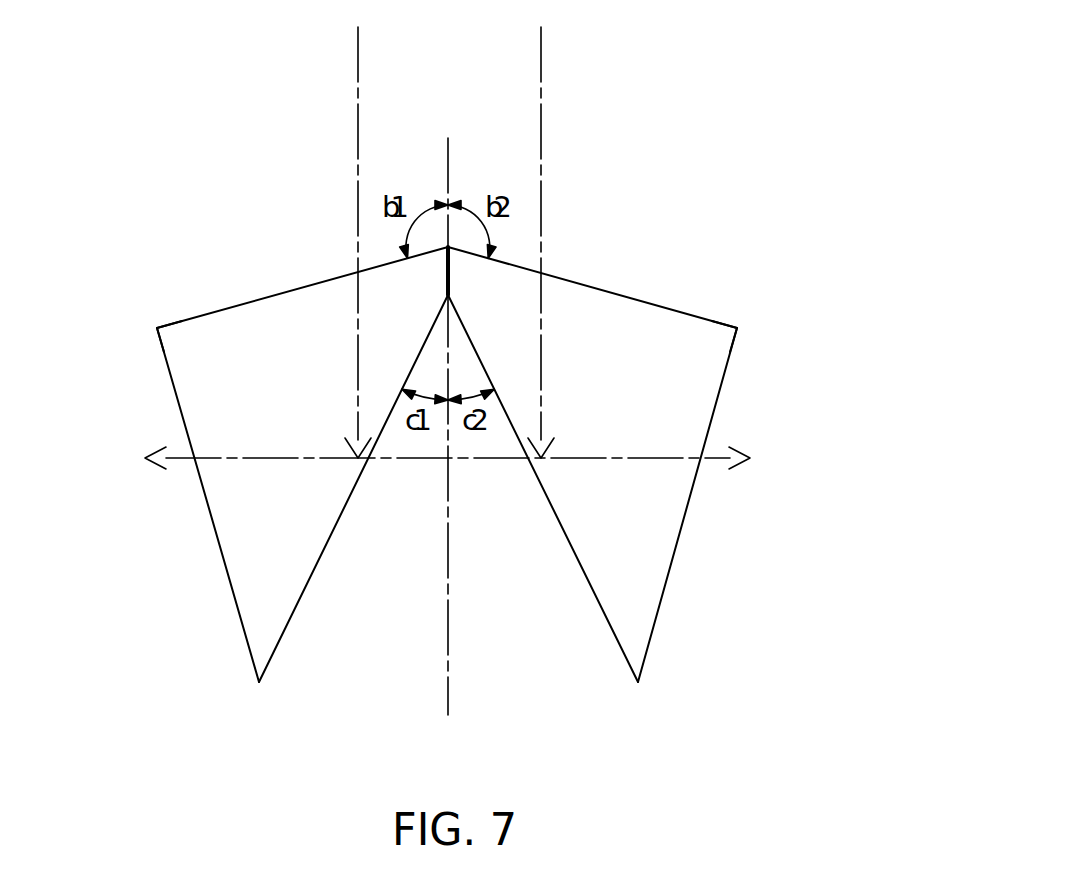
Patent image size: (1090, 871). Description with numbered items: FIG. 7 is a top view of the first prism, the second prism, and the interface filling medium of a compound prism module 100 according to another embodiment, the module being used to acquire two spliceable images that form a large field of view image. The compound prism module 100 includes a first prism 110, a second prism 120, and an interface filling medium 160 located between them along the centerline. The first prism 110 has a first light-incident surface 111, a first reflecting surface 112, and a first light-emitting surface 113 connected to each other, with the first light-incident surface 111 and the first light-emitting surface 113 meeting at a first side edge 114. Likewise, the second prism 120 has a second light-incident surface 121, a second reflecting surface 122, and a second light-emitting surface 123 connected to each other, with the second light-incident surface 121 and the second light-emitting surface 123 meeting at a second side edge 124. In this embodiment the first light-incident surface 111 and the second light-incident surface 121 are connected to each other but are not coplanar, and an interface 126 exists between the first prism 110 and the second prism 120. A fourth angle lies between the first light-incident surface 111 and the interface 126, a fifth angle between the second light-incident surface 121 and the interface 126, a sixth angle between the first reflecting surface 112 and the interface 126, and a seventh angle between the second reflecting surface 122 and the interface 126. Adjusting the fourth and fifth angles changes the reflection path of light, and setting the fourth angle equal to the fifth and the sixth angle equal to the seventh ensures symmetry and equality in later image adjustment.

The compound prism module 100 is at (678, 115).
The first prism 110 is at (258, 563).
The first light-incident surface 111 is at (280, 290).
The first reflecting surface 112 is at (318, 571).
The first light-emitting surface 113 is at (204, 504).
The first side edge 114 is at (157, 328).
The second prism 120 is at (640, 565).
The second light-incident surface 121 is at (616, 290).
The second reflecting surface 122 is at (578, 568).
The second light-emitting surface 123 is at (692, 504).
The second side edge 124 is at (737, 328).
The interface 126 is at (444, 673).
The interface filling medium 160 is at (452, 270).